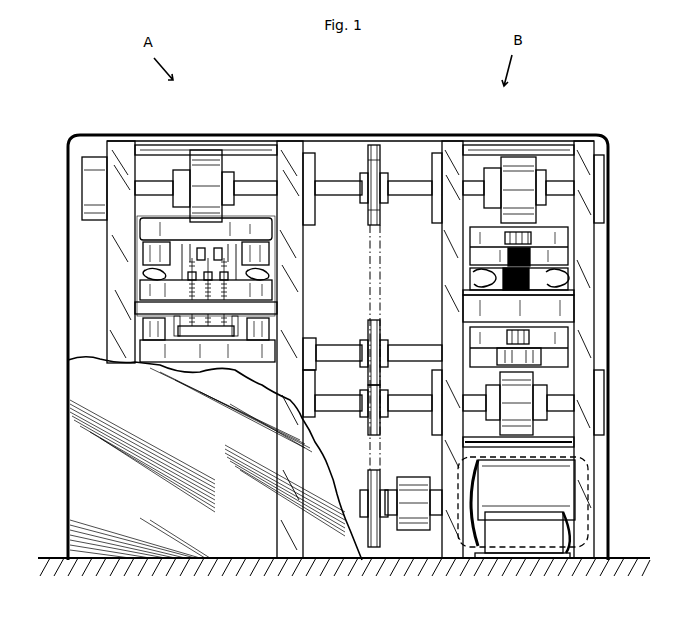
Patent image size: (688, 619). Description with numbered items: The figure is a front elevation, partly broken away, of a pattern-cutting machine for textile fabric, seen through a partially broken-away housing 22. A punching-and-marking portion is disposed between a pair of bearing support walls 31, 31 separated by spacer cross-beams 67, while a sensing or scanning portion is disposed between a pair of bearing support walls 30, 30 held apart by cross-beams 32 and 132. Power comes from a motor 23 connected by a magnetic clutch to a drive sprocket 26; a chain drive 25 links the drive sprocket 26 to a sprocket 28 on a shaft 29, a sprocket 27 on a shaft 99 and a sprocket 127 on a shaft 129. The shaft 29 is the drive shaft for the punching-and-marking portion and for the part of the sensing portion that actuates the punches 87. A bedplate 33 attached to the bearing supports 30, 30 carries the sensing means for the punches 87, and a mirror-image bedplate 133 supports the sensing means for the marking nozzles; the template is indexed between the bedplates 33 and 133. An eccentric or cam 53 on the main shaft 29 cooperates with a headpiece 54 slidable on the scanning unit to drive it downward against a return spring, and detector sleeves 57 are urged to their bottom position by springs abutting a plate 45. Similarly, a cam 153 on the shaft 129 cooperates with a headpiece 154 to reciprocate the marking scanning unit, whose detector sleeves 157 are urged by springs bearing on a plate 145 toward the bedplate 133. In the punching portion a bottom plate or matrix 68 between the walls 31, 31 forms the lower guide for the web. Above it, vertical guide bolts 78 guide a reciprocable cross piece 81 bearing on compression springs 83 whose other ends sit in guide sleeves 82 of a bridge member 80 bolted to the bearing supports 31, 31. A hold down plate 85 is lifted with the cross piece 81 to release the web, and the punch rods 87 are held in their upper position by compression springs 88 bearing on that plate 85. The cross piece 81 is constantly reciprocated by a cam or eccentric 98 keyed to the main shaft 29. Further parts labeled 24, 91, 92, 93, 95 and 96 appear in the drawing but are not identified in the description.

The housing 22 is at (85, 466).
The motor 23 is at (560, 490).
The motor drive gear 24 is at (410, 484).
The chain drive 25 is at (366, 296).
The drive sprocket 26 is at (365, 484).
The sprocket 27 is at (365, 334).
The sprocket 28 is at (366, 176).
The main shaft 29 is at (410, 192).
The bearing support walls 30 is at (452, 302).
The bearing support walls 31 is at (116, 298).
The cross-beam 32 is at (476, 146).
The bedplate 33 is at (468, 305).
The plate 45 is at (532, 246).
The eccentric or cam 53 is at (517, 172).
The headpiece 54 is at (486, 232).
The detector sleeves 57 is at (555, 287).
The spacer cross-beams 67 is at (160, 146).
The bottom plate 68 is at (150, 351).
The vertical guide bolts 78 is at (150, 326).
The bridge member 80 is at (270, 292).
The cross piece 81 is at (155, 230).
The guide sleeves 82 is at (155, 252).
The compression springs 83 is at (150, 270).
The hold down plate 85 is at (210, 332).
The punch members 87 is at (177, 330).
The compression springs 88 is at (233, 330).
The bolt 91 is at (190, 291).
The nut 92 is at (188, 276).
The bolt 93 is at (226, 291).
The nut 95 is at (228, 276).
The post 96 is at (226, 245).
The cam or eccentric 98 is at (207, 176).
The shaft 99 is at (334, 362).
The sprocket 127 is at (366, 428).
The shaft 129 is at (405, 398).
The cross-beam 132 is at (565, 447).
The bedplate 133 is at (463, 276).
The plate 145 is at (504, 362).
The eccentric or cam 153 is at (515, 435).
The headpiece 154 is at (555, 360).
The detector sleeves 157 is at (530, 340).